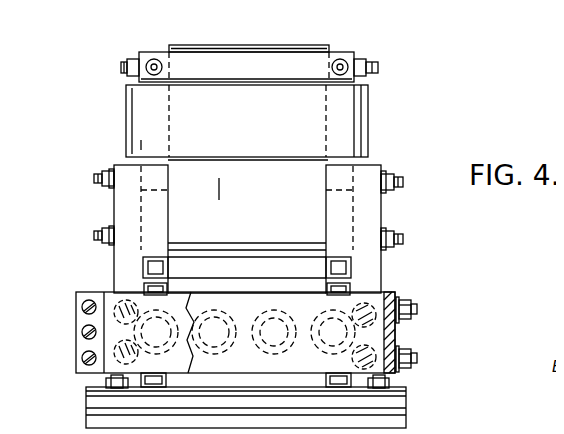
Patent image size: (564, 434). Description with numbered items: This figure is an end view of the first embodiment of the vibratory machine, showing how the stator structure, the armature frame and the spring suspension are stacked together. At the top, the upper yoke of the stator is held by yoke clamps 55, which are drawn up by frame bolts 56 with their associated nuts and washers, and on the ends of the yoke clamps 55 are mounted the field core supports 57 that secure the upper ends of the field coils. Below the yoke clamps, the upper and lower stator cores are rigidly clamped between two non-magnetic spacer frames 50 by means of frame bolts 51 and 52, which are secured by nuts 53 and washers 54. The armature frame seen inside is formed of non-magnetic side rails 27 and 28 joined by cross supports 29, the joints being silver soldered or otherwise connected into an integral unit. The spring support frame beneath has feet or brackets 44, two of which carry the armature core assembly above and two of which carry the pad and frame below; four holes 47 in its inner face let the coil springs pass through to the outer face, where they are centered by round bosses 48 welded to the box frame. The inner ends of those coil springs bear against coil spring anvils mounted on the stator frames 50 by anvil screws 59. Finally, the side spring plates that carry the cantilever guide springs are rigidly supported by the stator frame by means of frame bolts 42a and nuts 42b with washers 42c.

The side rail 27 is at (326, 268).
The side rail 28 is at (168, 270).
The cross support 29 is at (247, 266).
The frame bolt 42a is at (416, 310).
The nut 42b is at (410, 302).
The washer 42c is at (399, 321).
The foot or bracket 44 is at (143, 289).
The hole 47 is at (241, 360).
The round boss 48 is at (240, 316).
The spacer frame 50 is at (121, 260).
The frame bolt 51 is at (401, 183).
The frame bolt 52 is at (403, 238).
The nut 53 is at (109, 189).
The washer 54 is at (113, 166).
The yoke clamp 55 is at (152, 53).
The frame bolt 56 is at (119, 67).
The field core support 57 is at (224, 58).
The anvil screw 59 is at (110, 314).